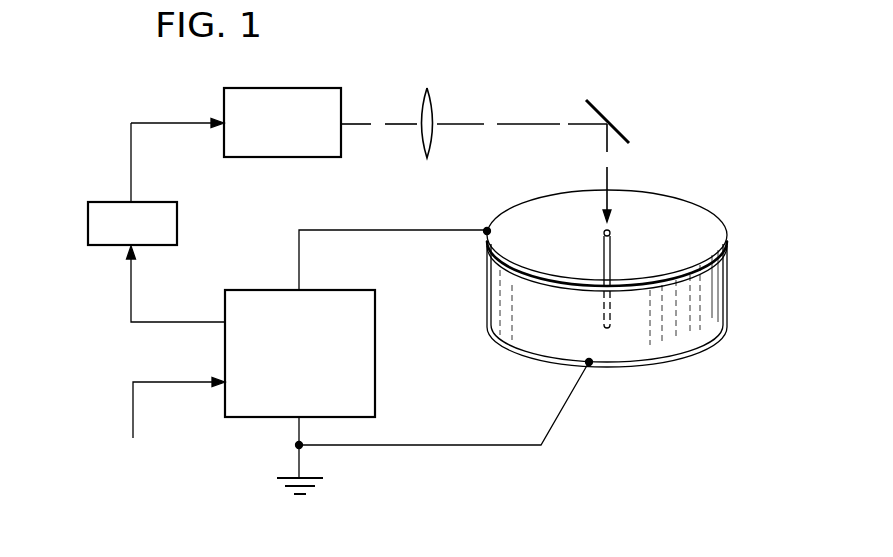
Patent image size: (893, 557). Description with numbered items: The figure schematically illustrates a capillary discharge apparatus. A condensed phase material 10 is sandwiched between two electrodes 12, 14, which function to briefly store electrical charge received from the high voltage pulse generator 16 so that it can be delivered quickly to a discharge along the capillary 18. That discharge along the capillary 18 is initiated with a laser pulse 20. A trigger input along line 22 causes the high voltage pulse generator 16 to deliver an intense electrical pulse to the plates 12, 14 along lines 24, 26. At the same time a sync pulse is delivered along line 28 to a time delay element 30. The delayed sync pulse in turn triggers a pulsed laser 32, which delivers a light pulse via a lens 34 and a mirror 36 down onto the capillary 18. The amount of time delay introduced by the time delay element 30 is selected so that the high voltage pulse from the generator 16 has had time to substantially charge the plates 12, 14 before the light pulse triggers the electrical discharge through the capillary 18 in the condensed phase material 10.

The condensed phase material 10 is at (710, 293).
The electrode 12 is at (697, 218).
The electrode 14 is at (688, 355).
The high voltage pulse generator 16 is at (376, 338).
The capillary 18 is at (600, 252).
The laser pulse 20 is at (606, 150).
The trigger input line 22 is at (178, 386).
The line 24 is at (413, 233).
The line 26 is at (447, 447).
The sync line 28 is at (130, 284).
The time delay element 30 is at (88, 224).
The pulsed laser 32 is at (323, 90).
The lens 34 is at (437, 102).
The mirror 36 is at (599, 104).